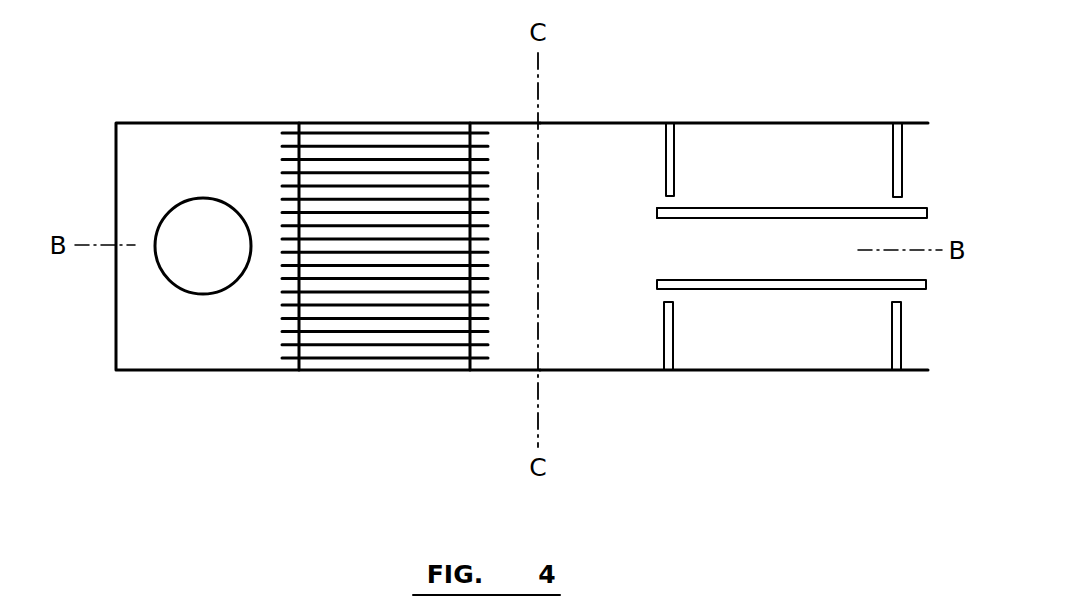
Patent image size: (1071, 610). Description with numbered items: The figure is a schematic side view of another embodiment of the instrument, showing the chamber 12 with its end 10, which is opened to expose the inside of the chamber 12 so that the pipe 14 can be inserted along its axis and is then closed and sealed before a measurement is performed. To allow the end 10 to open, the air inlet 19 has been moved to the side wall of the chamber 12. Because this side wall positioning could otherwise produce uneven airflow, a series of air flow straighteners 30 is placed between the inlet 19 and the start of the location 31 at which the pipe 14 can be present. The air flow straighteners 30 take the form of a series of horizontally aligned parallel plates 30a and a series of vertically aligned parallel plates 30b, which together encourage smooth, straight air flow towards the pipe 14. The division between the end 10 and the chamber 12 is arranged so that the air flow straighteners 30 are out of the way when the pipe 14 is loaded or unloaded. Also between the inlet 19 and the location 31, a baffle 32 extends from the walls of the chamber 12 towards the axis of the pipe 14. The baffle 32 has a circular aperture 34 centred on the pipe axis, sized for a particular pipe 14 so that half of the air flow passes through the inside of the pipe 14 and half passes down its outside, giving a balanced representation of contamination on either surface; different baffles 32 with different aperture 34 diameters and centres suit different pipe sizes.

The end 10 is at (222, 377).
The chamber 12 is at (756, 379).
The pipe 14 is at (823, 285).
The air inlet 19 is at (194, 259).
The air flow straighteners 30 is at (340, 250).
The horizontally aligned parallel plates 30a is at (290, 236).
The vertically aligned parallel plates 30b is at (428, 130).
The location 31 is at (772, 180).
The baffle 32 is at (674, 157).
The circular aperture 34 is at (663, 204).